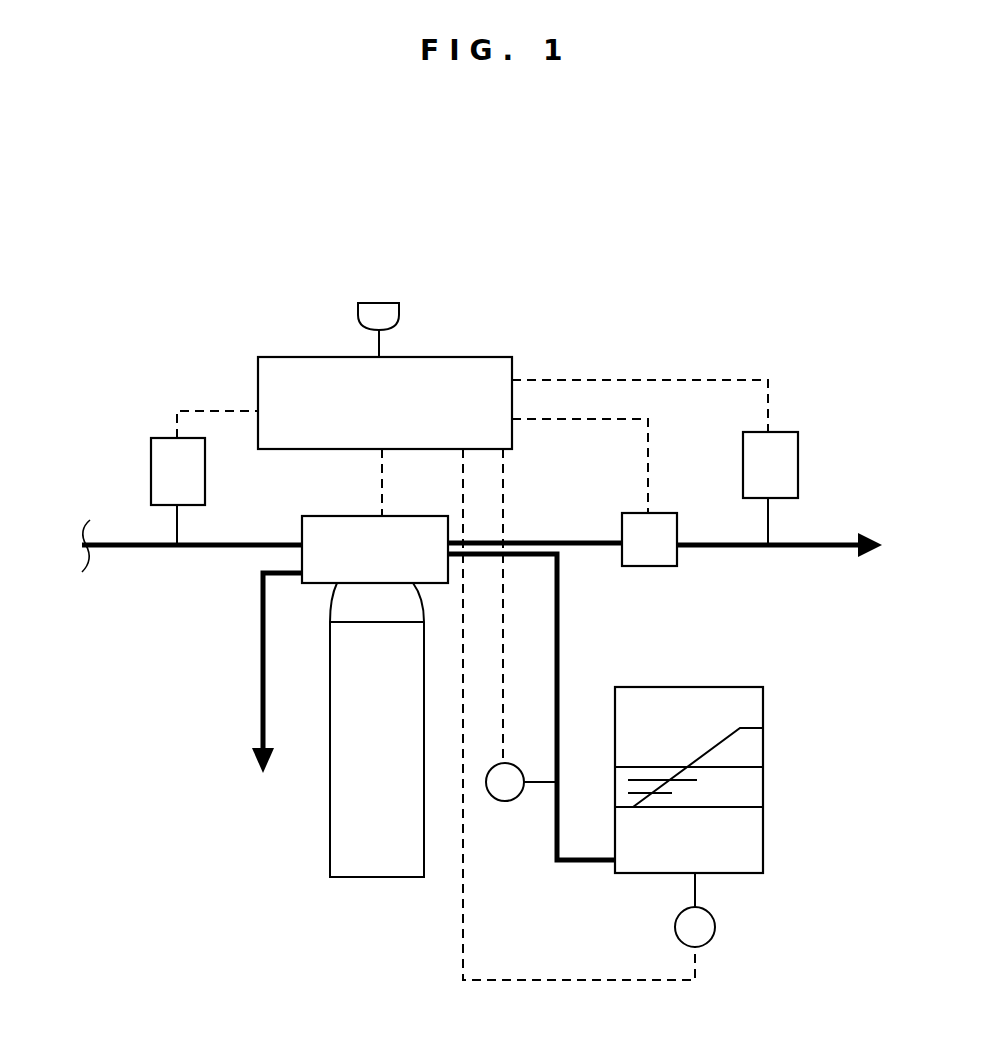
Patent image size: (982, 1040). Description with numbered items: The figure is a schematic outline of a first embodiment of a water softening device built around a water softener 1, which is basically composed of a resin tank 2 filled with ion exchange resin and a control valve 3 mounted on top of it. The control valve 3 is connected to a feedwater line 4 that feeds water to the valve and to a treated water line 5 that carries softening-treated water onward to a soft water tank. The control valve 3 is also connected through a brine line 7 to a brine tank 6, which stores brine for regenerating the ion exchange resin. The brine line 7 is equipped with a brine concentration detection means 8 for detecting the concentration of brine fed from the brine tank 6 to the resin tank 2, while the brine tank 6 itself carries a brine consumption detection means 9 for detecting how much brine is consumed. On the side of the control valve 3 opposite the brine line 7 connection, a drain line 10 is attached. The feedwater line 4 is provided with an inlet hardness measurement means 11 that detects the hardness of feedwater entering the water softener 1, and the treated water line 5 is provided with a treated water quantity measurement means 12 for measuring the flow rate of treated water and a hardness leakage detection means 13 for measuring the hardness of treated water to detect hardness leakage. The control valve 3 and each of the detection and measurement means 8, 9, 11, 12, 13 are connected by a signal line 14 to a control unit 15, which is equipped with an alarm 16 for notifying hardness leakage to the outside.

The water softener 1 is at (364, 523).
The resin tank 2 is at (368, 878).
The control valve 3 is at (412, 540).
The feedwater line 4 is at (128, 550).
The treated water line 5 is at (723, 549).
The brine tank 6 is at (757, 838).
The brine line 7 is at (560, 634).
The brine concentration detection means 8 is at (503, 798).
The brine consumption detection means 9 is at (706, 930).
The drain line 10 is at (260, 682).
The inlet hardness measurement means 11 is at (170, 466).
The treated water quantity measurement means 12 is at (654, 567).
The hardness leakage detection means 13 is at (785, 466).
The signal line 14 is at (193, 411).
The control unit 15 is at (480, 378).
The alarm 16 is at (380, 318).